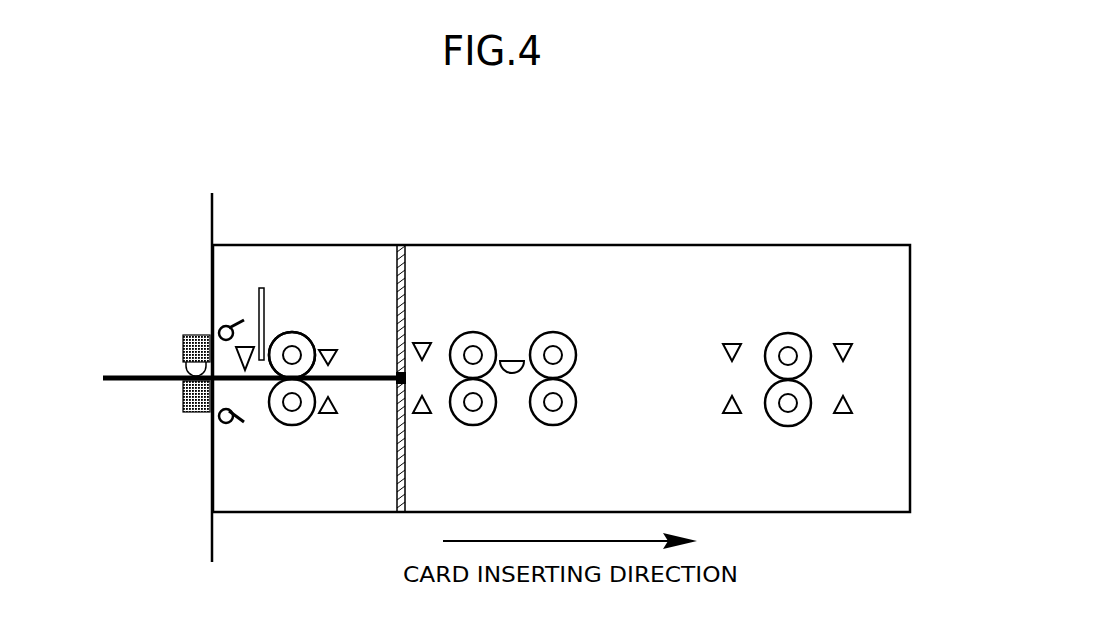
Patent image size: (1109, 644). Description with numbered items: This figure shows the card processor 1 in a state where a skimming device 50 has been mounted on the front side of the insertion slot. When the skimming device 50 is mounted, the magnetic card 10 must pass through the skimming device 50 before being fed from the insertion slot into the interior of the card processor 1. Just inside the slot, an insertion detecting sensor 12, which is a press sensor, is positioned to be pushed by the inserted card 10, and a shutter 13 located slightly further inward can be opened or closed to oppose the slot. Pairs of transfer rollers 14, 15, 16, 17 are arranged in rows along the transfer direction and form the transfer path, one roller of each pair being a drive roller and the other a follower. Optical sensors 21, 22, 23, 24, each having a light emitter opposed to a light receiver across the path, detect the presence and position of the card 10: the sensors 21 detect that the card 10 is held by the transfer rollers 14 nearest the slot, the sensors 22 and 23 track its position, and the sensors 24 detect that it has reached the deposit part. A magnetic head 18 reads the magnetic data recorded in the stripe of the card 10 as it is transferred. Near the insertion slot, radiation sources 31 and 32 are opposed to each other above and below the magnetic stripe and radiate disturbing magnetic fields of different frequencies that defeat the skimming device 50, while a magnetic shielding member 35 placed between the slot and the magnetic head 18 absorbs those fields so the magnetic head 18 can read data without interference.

The card processor 1 is at (700, 172).
The magnetic card 10 is at (103, 376).
The insertion detecting sensor 12 is at (270, 345).
The shutter 13 is at (267, 300).
The transfer rollers 14 is at (308, 337).
The transfer rollers 15 is at (480, 337).
The transfer rollers 16 is at (562, 343).
The transfer rollers 17 is at (792, 337).
The magnetic head 18 is at (512, 360).
The sensors 21 is at (335, 352).
The sensors 22 is at (428, 345).
The sensors 23 is at (737, 347).
The sensors 24 is at (847, 347).
The radiation source 31 is at (226, 326).
The radiation source 32 is at (228, 424).
The magnetic shielding member 35 is at (407, 245).
The skimming device 50 is at (182, 337).